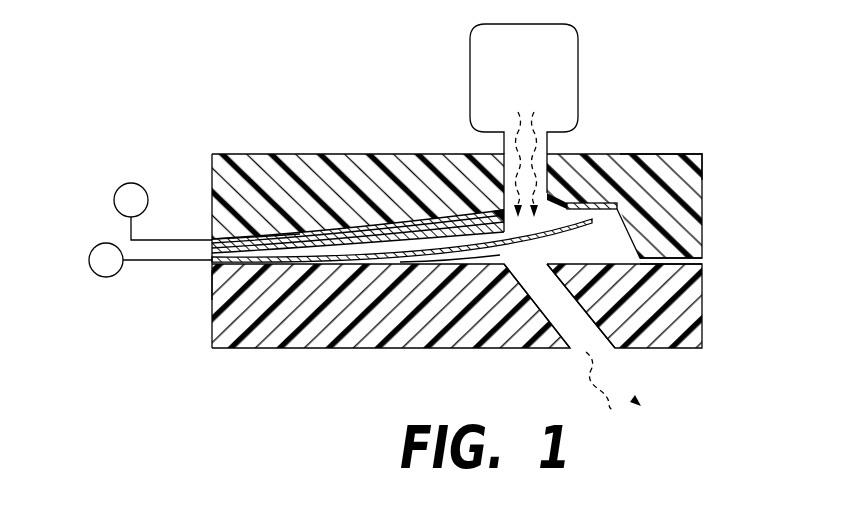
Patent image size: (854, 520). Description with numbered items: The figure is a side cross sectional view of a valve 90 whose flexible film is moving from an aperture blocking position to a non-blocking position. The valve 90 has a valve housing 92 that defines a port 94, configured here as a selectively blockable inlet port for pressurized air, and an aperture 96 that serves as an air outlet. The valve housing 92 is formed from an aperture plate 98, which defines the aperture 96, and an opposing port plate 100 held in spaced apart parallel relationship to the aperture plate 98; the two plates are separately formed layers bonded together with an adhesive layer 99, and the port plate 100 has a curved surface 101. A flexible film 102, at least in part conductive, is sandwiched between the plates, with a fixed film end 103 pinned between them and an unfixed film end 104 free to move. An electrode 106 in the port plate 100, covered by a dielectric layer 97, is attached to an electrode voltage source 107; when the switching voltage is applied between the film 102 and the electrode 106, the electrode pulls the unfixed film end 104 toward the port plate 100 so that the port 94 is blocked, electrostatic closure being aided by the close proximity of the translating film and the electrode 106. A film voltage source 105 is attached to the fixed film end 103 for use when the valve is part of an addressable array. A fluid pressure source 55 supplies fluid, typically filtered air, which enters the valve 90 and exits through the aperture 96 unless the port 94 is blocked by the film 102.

The valve 90 is at (300, 75).
The valve housing 92 is at (265, 146).
The port 94 is at (542, 156).
The fluid pressure source 55 is at (538, 78).
The aperture 96 is at (582, 358).
The dielectric layer 97 is at (600, 204).
The aperture plate 98 is at (703, 347).
The adhesive layer 99 is at (702, 261).
The port plate 100 is at (668, 154).
The curved surface 101 is at (455, 206).
The flexible film 102 is at (484, 272).
The fixed film end 103 is at (212, 282).
The unfixed film end 104 is at (580, 222).
The film voltage source 105 is at (90, 259).
The electrode 106 is at (238, 234).
The electrode voltage source 107 is at (114, 197).